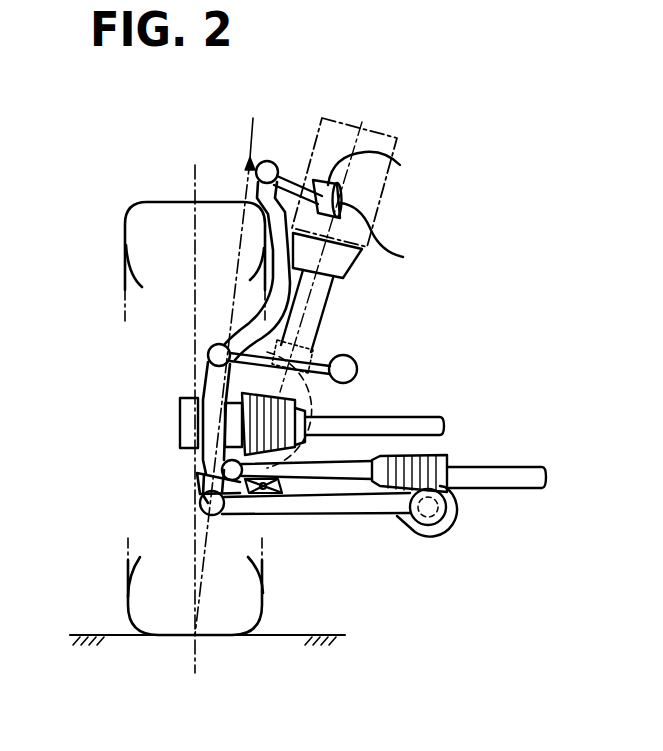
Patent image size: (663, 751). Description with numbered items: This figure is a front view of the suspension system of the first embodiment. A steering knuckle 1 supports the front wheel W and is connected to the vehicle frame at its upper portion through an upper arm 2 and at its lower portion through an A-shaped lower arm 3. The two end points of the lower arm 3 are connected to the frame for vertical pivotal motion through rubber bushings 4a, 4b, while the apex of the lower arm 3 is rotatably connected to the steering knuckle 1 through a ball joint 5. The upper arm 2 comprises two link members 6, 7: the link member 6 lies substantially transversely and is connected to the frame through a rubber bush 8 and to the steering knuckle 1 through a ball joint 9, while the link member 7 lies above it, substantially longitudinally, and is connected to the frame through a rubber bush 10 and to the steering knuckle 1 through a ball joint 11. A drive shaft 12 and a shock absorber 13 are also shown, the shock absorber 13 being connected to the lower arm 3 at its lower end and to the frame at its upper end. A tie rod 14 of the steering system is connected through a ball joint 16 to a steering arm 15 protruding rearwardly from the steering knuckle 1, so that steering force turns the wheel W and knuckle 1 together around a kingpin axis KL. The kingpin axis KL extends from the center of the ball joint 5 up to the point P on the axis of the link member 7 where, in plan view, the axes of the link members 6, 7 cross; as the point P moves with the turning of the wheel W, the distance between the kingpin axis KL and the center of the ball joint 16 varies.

The steering knuckle 1 is at (181, 400).
The upper arm 2 is at (428, 241).
The lower arm 3 is at (333, 516).
The rubber bushing 4a is at (418, 524).
The rubber bushing 4b is at (452, 504).
The ball joint 5 is at (200, 504).
The link member 6 is at (300, 345).
The link member 7 is at (355, 241).
The rubber bush 8 is at (357, 367).
The ball joint 9 is at (214, 344).
The rubber bush 10 is at (407, 161).
The ball joint 11 is at (256, 176).
The drive shaft 12 is at (390, 417).
The shock absorber 13 is at (383, 190).
The tie rod 14 is at (313, 480).
The steering arm 15 is at (200, 482).
The ball joint 16 is at (222, 470).
The wheel W is at (127, 236).
The kingpin axis KL is at (247, 141).
The cross point P is at (258, 157).